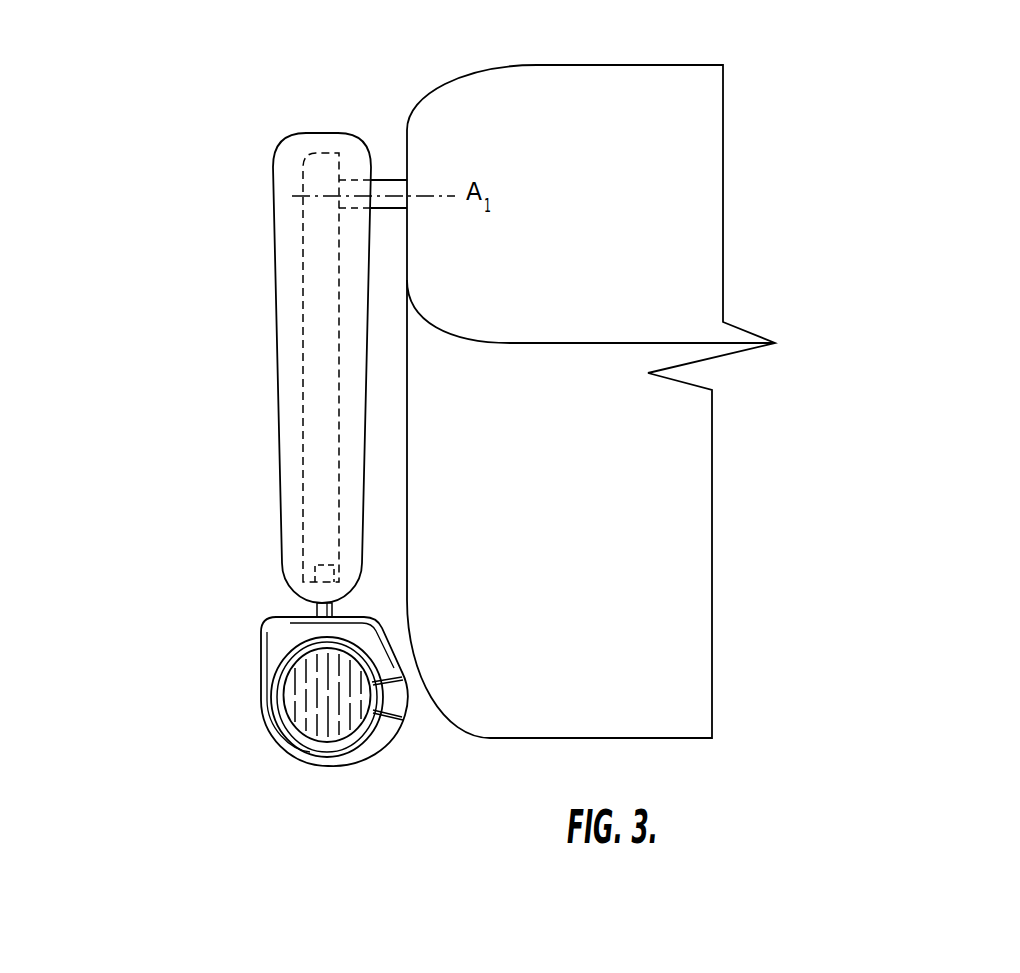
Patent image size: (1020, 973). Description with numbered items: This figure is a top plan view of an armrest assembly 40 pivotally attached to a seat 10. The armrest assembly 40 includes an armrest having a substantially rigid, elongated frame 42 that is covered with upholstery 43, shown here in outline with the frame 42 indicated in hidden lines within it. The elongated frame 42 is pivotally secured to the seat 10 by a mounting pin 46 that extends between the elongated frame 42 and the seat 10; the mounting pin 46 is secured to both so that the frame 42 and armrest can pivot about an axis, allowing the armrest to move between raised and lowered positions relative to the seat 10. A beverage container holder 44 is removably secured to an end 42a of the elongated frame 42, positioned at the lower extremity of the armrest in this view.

The seat 10 is at (698, 198).
The armrest assembly 40 is at (208, 602).
The elongated frame 42 is at (320, 375).
The end of the elongated frame 42a is at (303, 582).
The upholstery 43 is at (285, 248).
The beverage container holder 44 is at (388, 668).
The mounting pin 46 is at (393, 180).